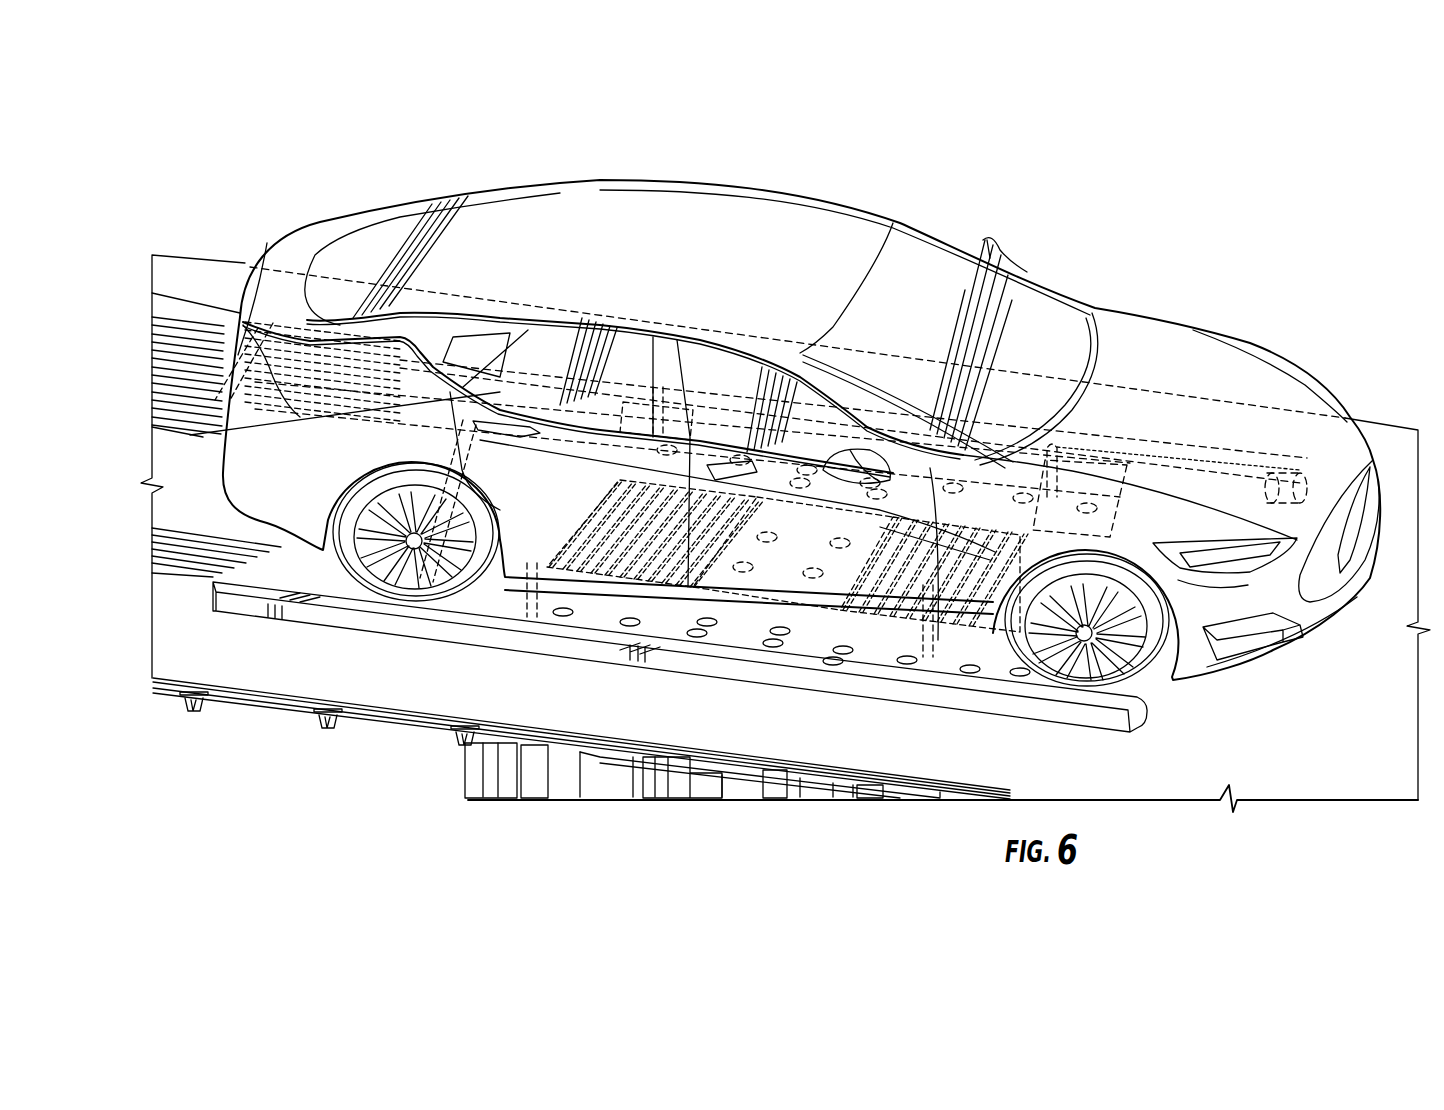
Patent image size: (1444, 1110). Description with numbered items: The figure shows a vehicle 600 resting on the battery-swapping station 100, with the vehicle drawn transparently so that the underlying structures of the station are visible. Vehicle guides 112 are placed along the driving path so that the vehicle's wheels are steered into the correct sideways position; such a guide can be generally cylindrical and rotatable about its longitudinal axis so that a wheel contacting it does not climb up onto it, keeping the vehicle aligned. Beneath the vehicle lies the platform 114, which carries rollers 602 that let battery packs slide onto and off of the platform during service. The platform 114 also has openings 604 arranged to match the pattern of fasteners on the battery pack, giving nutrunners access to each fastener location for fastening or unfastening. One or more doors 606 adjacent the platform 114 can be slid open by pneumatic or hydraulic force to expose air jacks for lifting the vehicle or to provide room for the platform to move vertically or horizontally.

The battery-swapping station 100 is at (328, 787).
The vehicle guides 112 is at (190, 318).
The platform 114 is at (1090, 537).
The vehicle 600 is at (808, 192).
The rollers 602 is at (873, 540).
The openings 604 is at (805, 580).
The doors 606 is at (457, 462).